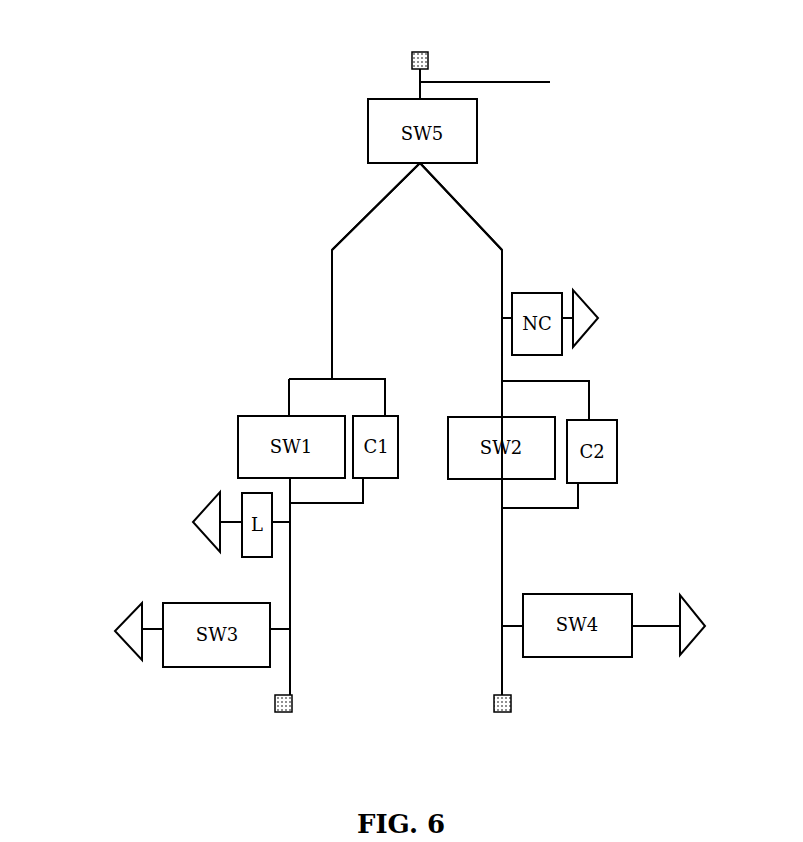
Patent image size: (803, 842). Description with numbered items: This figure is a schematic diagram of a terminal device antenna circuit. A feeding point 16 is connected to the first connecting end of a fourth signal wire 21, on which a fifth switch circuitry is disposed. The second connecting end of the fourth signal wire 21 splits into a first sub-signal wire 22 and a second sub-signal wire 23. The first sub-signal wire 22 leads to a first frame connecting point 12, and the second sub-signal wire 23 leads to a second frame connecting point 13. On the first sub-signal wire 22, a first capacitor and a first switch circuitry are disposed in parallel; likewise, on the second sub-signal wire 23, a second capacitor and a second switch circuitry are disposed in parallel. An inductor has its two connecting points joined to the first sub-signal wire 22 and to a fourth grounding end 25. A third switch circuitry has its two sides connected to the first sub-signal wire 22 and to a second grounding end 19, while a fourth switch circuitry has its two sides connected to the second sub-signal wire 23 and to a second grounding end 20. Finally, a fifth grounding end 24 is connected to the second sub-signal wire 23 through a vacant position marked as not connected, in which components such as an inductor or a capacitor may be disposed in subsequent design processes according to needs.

The first frame connecting point 12 is at (282, 713).
The second frame connecting point 13 is at (508, 713).
The feeding point 16 is at (422, 52).
The second grounding end 19 is at (125, 625).
The second grounding end 20 is at (697, 612).
The fourth signal wire 21 is at (504, 81).
The first sub-signal wire 22 is at (333, 248).
The second sub-signal wire 23 is at (500, 246).
The fifth grounding end 24 is at (587, 298).
The fourth grounding end 25 is at (207, 502).